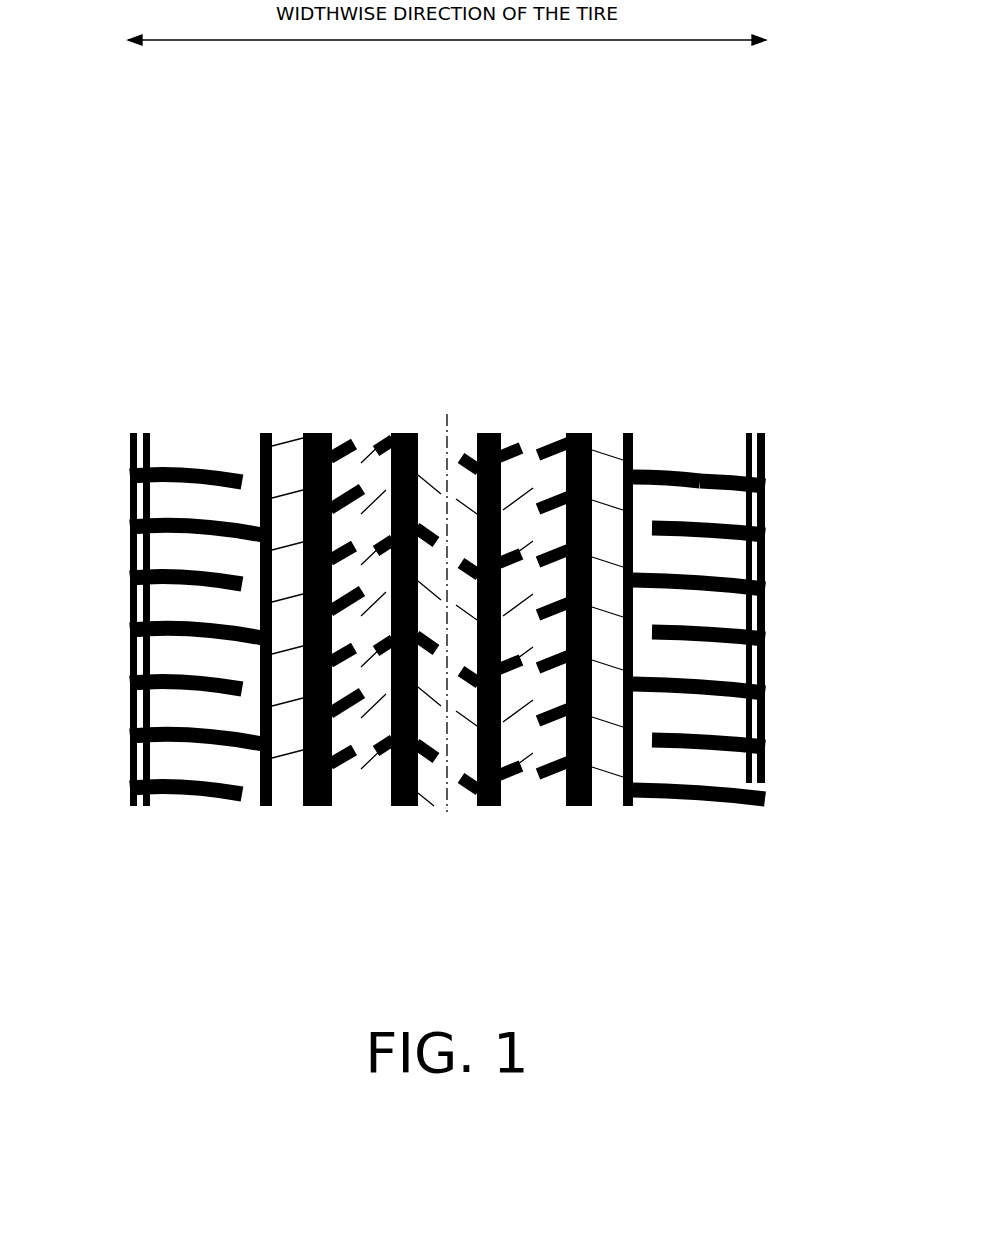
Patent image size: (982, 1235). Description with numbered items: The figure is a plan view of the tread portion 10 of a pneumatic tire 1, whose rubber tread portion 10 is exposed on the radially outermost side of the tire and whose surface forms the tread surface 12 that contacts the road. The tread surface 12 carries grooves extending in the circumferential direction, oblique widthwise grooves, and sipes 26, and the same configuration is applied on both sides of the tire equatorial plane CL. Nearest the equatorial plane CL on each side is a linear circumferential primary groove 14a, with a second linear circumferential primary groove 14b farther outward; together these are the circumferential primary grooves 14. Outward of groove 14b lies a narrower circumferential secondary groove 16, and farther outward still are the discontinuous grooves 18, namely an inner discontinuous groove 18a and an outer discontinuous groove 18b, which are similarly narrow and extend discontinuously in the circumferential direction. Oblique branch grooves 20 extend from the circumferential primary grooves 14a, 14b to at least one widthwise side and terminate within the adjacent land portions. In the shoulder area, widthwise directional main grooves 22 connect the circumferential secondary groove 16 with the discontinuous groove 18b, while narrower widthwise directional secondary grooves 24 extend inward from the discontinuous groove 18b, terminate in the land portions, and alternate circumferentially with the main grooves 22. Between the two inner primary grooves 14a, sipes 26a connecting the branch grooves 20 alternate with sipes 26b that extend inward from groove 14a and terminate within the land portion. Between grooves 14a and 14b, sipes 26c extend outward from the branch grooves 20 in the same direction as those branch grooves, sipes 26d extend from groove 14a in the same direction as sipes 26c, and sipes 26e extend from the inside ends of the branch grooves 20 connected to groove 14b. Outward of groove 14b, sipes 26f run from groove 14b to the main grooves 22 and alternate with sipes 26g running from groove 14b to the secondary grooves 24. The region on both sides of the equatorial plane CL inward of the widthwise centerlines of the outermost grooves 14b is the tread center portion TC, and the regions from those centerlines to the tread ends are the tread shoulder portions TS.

The pneumatic tire 1 is at (593, 259).
The tread portion 10 is at (285, 807).
The tread surface 12 is at (447, 552).
The circumferential primary grooves 14 is at (603, 293).
The circumferential primary groove on the inner side 14a is at (407, 440).
The circumferential primary groove on the outer side 14b is at (325, 440).
The circumferential secondary groove 16 is at (267, 807).
The discontinuous grooves 18 is at (702, 890).
The discontinuous groove on the inner side 18a is at (145, 807).
The discontinuous groove on the outer side 18b is at (131, 807).
The branch grooves 20 is at (337, 808).
The widthwise directional main grooves 22 is at (130, 527).
The widthwise directional secondary grooves 24 is at (130, 476).
The sipes 26 is at (833, 155).
The sipes connecting the branch grooves 26a is at (432, 470).
The sipes extending inward from circumferential primary groove 14a 26b is at (428, 465).
The sipes extending outward from the branch grooves 26c is at (355, 468).
The sipes extending from circumferential primary groove 14a 26d is at (330, 462).
The sipes extending from the inside ends of the branch grooves 26e is at (303, 457).
The sipes extending to the widthwise directional main grooves 26f is at (645, 480).
The sipes extending to the widthwise directional secondary grooves 26g is at (702, 475).
The tire equatorial plane CL is at (446, 600).
The tread center portion TC is at (317, 820).
The tread shoulder portions TS is at (118, 412).